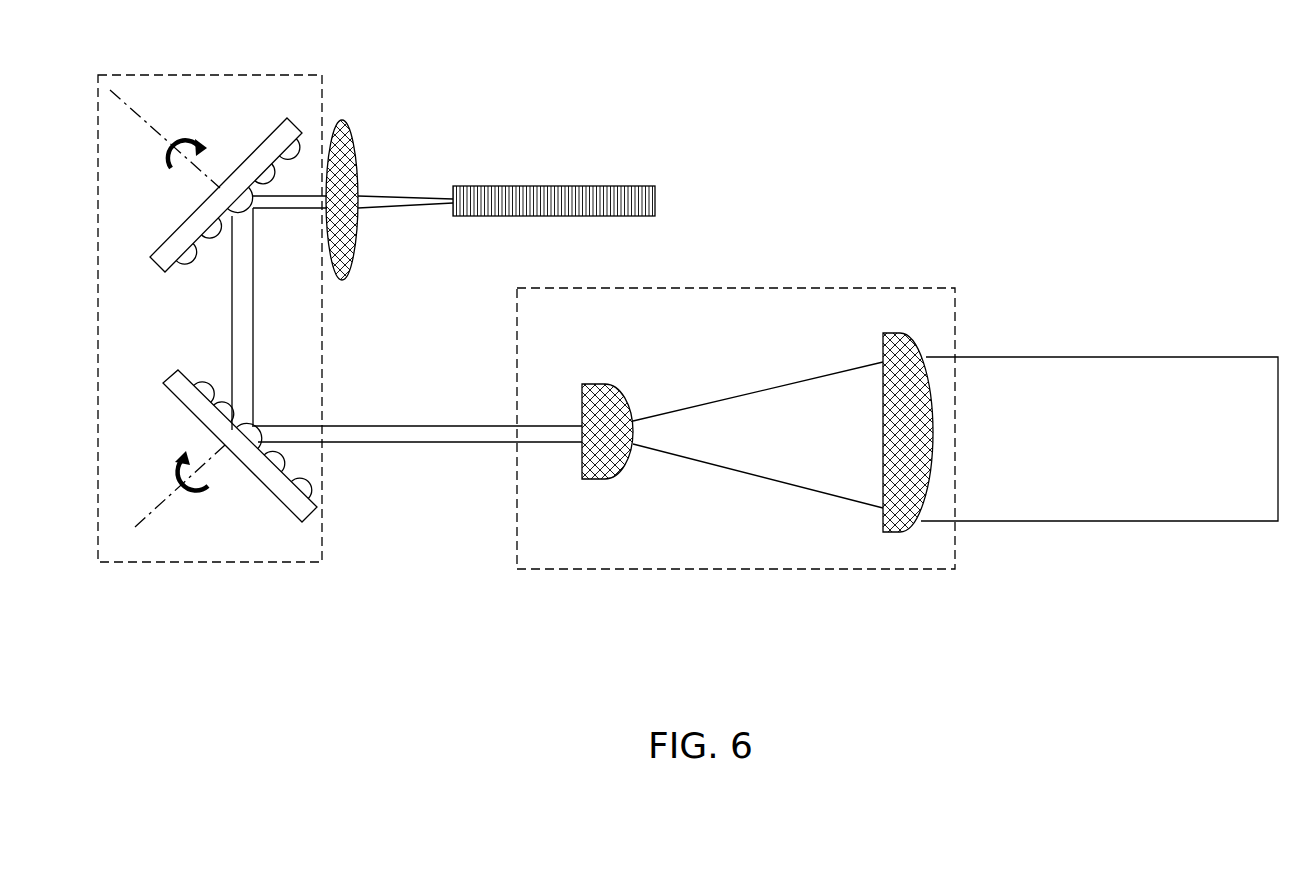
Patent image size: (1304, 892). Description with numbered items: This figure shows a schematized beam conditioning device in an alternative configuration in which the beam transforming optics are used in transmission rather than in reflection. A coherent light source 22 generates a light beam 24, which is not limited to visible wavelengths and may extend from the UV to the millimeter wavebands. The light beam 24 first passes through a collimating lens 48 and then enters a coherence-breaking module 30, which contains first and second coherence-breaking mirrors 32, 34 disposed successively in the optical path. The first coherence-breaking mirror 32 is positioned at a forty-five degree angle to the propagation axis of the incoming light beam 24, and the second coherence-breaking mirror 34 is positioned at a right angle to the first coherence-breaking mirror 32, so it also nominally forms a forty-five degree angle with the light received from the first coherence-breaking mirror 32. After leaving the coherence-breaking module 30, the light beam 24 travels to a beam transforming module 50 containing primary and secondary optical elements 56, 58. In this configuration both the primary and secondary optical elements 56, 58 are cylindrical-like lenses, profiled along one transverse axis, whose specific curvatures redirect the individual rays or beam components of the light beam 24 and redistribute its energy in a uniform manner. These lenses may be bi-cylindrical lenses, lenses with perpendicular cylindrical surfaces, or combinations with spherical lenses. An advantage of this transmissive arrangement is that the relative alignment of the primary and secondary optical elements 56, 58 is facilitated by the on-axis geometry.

The coherence-breaking module 30 is at (236, 74).
The first coherence-breaking mirror 32 is at (172, 233).
The second coherence-breaking mirror 34 is at (271, 494).
The collimating lens 48 is at (343, 120).
The coherent light source 22 is at (561, 185).
The light beam 24 is at (397, 206).
The beam transforming module 50 is at (826, 288).
The primary optical element 56 is at (600, 384).
The secondary optical element 58 is at (901, 333).